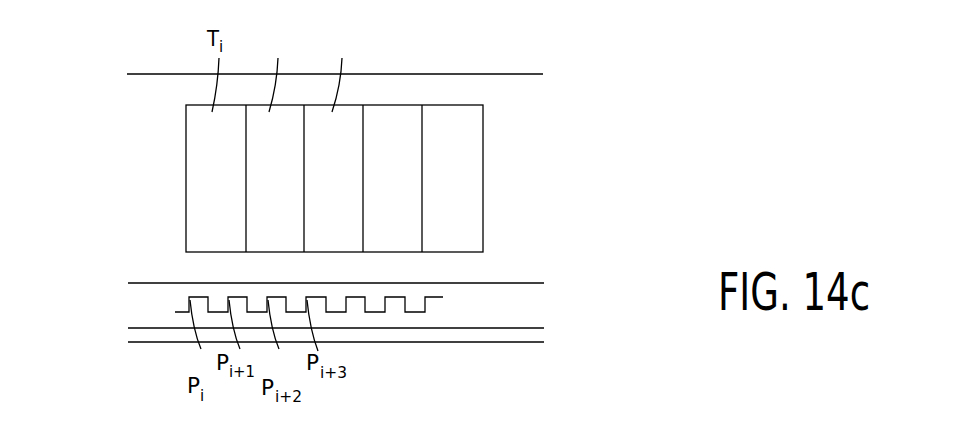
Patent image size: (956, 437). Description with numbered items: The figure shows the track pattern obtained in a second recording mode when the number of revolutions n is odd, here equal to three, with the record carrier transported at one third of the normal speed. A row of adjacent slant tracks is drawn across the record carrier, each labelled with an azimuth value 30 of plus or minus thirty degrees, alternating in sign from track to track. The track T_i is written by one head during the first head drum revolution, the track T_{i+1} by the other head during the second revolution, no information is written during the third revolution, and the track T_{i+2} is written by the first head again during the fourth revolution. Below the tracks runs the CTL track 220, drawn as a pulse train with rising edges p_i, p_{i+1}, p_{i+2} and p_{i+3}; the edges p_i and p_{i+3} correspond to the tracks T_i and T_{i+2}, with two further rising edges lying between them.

The CTL track 220 is at (527, 288).
The phase value cells 30 is at (334, 178).
The n value 3 is at (75, 175).
The T i+1 label 1 is at (270, 69).
The T i+2 label 2 is at (337, 69).